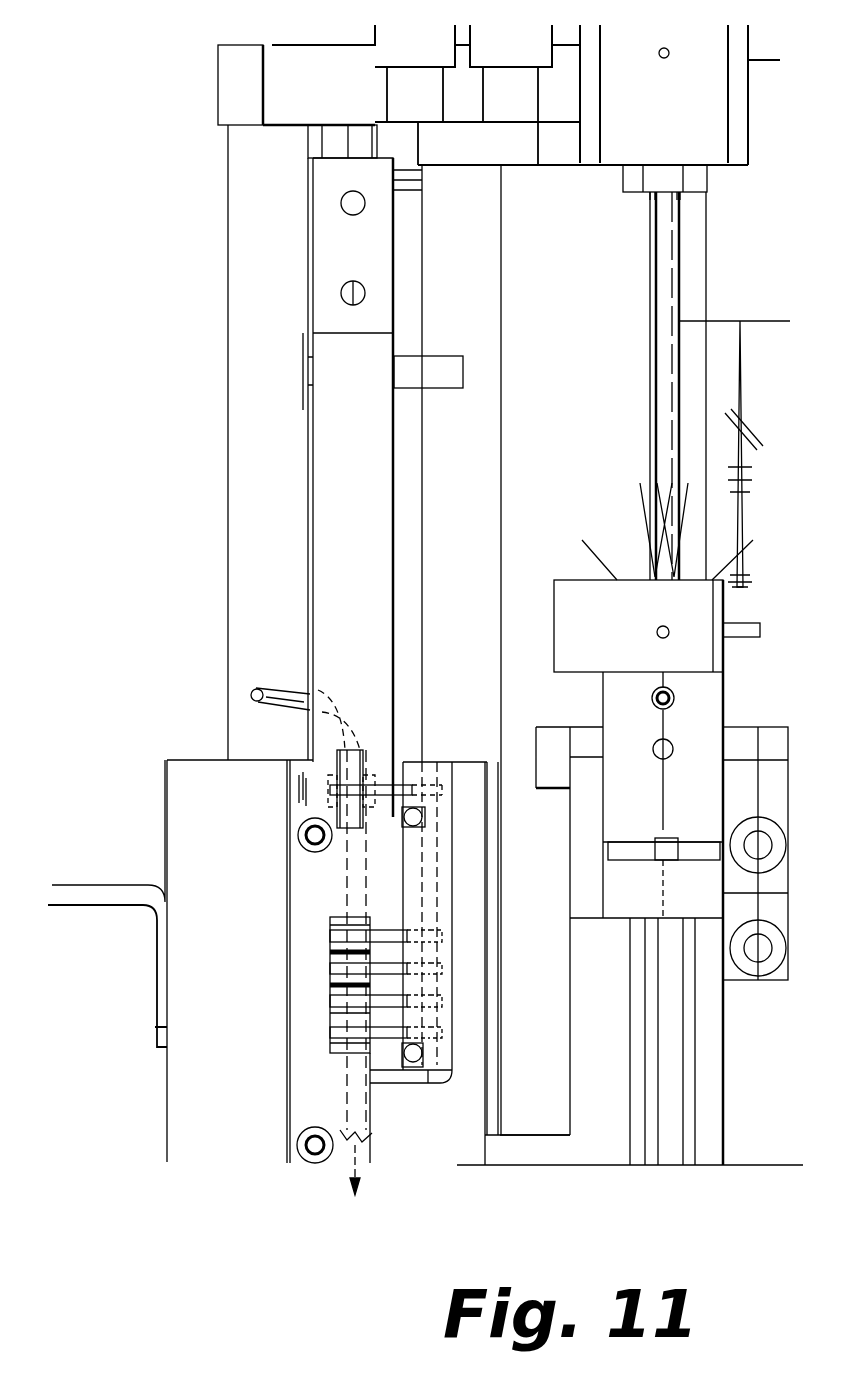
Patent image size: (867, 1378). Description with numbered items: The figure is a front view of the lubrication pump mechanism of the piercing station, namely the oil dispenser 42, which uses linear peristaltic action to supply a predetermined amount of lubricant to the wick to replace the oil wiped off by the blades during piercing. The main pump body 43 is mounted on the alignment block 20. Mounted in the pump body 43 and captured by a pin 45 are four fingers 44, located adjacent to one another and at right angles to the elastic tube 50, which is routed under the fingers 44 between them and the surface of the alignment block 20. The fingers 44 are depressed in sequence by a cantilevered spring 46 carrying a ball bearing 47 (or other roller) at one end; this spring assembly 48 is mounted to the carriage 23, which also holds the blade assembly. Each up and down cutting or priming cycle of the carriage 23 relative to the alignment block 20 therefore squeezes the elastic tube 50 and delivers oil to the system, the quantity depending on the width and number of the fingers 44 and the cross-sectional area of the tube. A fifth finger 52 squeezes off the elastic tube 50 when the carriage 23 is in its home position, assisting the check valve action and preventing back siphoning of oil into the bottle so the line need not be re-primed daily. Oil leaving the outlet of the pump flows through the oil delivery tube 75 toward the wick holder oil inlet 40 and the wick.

The alignment block 20 is at (490, 812).
The carriage 23 is at (228, 205).
The wick holder oil inlet 40 is at (369, 1197).
The oil dispenser 42 is at (424, 962).
The main pump body 43 is at (453, 1038).
The fingers 44 is at (330, 1033).
The pin 45 is at (437, 840).
The cantilevered spring 46 is at (296, 487).
The ball bearing 47 is at (355, 750).
The spring assembly 48 is at (313, 513).
The elastic tube 50 is at (268, 685).
The fifth finger 52 is at (403, 790).
The oil delivery tube 75 is at (369, 1197).